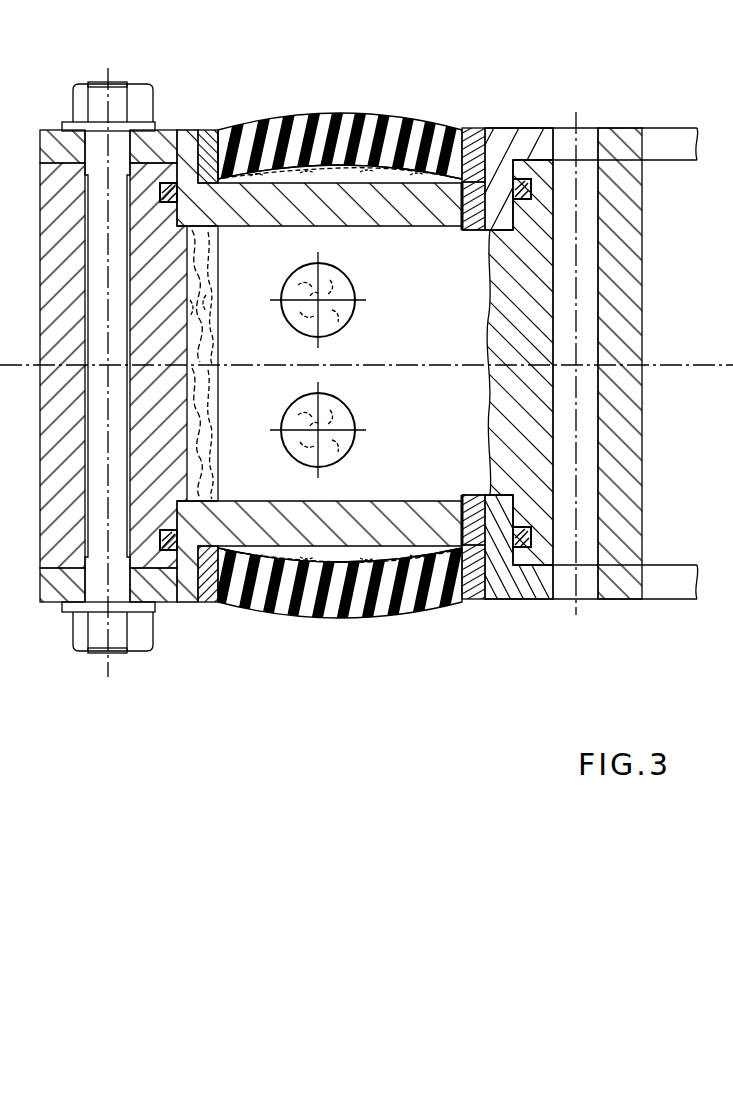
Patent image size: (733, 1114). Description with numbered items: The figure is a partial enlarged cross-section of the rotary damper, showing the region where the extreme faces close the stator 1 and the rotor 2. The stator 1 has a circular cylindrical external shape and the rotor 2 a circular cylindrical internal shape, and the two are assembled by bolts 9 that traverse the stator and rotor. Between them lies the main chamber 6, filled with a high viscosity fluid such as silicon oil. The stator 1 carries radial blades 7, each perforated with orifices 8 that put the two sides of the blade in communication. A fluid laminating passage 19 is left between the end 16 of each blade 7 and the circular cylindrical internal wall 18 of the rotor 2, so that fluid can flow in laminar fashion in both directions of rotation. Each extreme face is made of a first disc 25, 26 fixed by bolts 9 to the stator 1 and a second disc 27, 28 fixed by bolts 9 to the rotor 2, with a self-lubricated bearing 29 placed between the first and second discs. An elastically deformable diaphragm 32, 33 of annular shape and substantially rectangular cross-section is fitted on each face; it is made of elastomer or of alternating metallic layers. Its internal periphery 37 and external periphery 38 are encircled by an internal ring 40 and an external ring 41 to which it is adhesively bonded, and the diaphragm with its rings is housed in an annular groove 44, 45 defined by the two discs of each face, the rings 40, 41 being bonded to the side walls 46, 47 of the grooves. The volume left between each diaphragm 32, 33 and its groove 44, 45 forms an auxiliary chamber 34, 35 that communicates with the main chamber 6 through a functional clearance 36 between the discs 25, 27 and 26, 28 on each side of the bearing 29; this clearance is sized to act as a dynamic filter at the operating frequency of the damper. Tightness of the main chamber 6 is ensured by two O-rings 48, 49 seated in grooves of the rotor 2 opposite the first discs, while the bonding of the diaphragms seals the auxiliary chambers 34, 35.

The stator 1 is at (635, 302).
The rotor 2 is at (60, 553).
The main chamber 6 is at (293, 307).
The radial blade 7 is at (426, 345).
The orifice 8 is at (293, 420).
The bolt 9 is at (100, 203).
The blade end 16 is at (205, 300).
The circular cylindrical internal wall 18 is at (190, 318).
The fluid laminating passage 19 is at (203, 447).
The first disc 25 is at (547, 135).
The first disc 26 is at (545, 590).
The second disc 27 is at (162, 142).
The second disc 28 is at (165, 594).
The self-lubricated bearing 29 is at (475, 174).
The elastically deformable diaphragm 32 is at (334, 118).
The elastically deformable diaphragm 33 is at (335, 615).
The auxiliary chamber 34 is at (300, 168).
The auxiliary chamber 35 is at (318, 557).
The functional clearance 36 is at (462, 229).
The internal periphery 37 is at (465, 128).
The external periphery 38 is at (216, 130).
The internal ring 40 is at (480, 172).
The external ring 41 is at (208, 140).
The annular groove 44 is at (384, 178).
The annular groove 45 is at (393, 550).
The groove side wall 46 is at (500, 235).
The groove side wall 47 is at (185, 230).
The O-ring 48 is at (166, 532).
The O-ring 49 is at (533, 537).